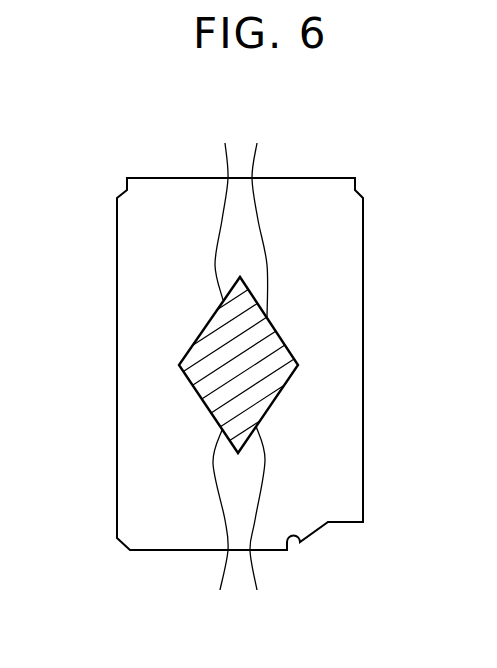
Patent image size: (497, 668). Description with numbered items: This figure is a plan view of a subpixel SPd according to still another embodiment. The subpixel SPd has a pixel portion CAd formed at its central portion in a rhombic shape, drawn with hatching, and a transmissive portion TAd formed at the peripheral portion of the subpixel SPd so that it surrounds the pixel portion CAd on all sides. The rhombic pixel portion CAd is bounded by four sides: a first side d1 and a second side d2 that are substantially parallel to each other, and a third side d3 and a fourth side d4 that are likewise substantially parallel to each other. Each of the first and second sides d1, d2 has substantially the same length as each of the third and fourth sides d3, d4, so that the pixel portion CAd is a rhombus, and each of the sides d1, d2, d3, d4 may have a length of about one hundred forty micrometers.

The subpixel SPd is at (198, 362).
The transmissive portion TAd is at (138, 398).
The pixel portion CAd is at (203, 347).
The first side d1 is at (221, 210).
The second side d2 is at (259, 521).
The third side d3 is at (216, 523).
The fourth side d4 is at (263, 219).